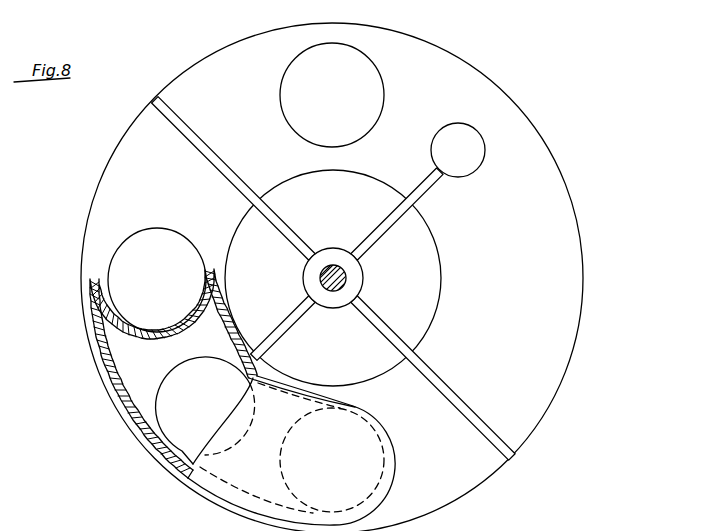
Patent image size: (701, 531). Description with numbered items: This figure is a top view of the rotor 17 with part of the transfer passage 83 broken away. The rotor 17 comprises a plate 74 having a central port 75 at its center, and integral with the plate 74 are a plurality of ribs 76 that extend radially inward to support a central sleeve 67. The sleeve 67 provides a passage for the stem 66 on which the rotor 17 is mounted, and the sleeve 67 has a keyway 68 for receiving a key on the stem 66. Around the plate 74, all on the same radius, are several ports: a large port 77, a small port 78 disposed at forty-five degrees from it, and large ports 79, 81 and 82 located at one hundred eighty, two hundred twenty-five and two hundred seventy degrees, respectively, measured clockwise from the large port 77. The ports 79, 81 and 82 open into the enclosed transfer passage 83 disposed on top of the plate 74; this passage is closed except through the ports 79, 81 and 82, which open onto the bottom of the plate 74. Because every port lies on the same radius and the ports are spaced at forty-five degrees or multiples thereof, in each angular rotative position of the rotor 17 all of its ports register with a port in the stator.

The rotor 17 is at (599, 183).
The stem 66 is at (337, 291).
The central sleeve 67 is at (340, 258).
The keyway 68 is at (314, 277).
The plate 74 is at (500, 243).
The central port 75 is at (431, 306).
The ribs 76 is at (292, 244).
The large port 77 is at (376, 109).
The small port 78 is at (481, 161).
The large port 79 is at (378, 450).
The large port 81 is at (156, 402).
The large port 82 is at (116, 310).
The transfer passage 83 is at (123, 398).